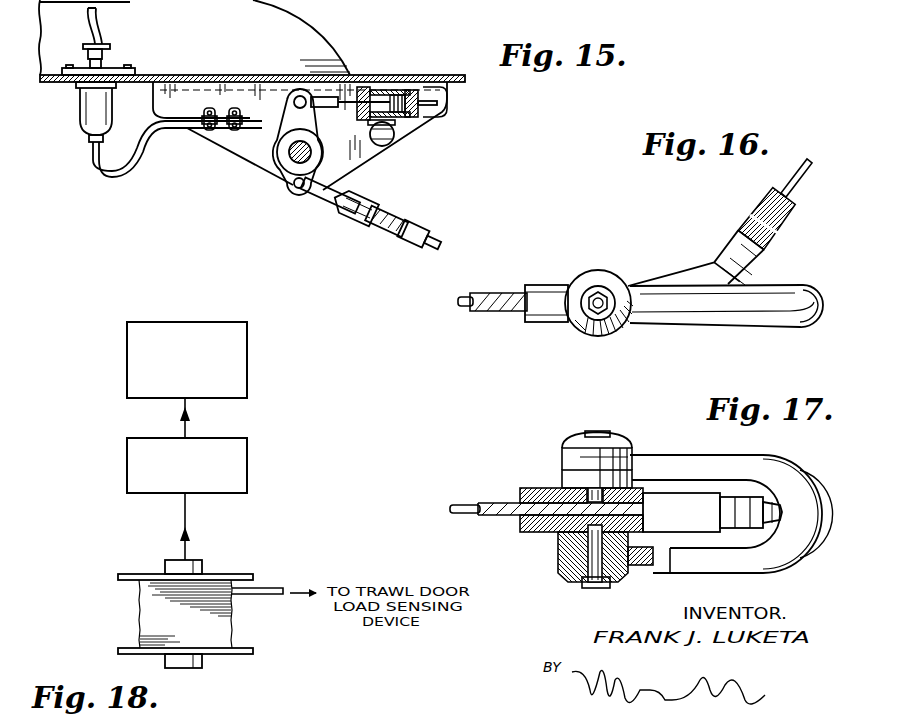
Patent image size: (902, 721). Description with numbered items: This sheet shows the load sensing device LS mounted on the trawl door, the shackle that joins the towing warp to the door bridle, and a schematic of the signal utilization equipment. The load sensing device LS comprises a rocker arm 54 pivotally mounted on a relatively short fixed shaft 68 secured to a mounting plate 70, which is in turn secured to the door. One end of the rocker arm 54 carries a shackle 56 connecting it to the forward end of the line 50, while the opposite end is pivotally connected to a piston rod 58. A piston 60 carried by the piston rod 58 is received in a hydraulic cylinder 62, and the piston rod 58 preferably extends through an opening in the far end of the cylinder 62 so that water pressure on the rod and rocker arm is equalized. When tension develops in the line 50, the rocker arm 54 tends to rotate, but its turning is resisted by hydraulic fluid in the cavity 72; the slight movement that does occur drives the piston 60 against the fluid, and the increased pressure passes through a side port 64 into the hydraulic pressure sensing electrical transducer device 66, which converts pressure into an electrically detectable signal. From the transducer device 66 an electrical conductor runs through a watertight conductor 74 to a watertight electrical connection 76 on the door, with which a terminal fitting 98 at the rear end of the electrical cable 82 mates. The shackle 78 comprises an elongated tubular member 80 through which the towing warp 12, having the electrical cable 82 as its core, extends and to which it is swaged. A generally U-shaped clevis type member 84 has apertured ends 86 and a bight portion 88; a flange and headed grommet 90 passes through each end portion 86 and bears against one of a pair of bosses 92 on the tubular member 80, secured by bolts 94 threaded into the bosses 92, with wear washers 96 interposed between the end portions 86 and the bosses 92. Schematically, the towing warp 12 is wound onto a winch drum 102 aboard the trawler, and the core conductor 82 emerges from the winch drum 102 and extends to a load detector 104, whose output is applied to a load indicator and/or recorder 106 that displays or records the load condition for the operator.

In FIG. 15, the load sensing device LS is at (350, 58).
In FIG. 15, the terminal fitting 98 is at (107, 62).
In FIG. 15, the watertight electrical connection 76 is at (90, 108).
In FIG. 15, the watertight conductor 74 is at (97, 165).
In FIG. 15, the mounting plate 70 is at (227, 143).
In FIG. 15, the fixed shaft 68 is at (290, 150).
In FIG. 15, the rocker arm 54 is at (283, 173).
In FIG. 15, the shackle 56 is at (317, 210).
In FIG. 15, the line 50 is at (424, 233).
In FIG. 15, the piston rod 58 is at (345, 100).
In FIG. 15, the cavity 72 is at (385, 95).
In FIG. 15, the hydraulic cylinder 62 is at (415, 88).
In FIG. 15, the piston 60 is at (420, 120).
In FIG. 15, the side port 64 is at (400, 125).
In FIG. 15, the hydraulic pressure sensing electrical transducer device 66 is at (381, 146).
In FIG. 16, the shackle 78 is at (621, 340).
In FIG. 17, the shackle 78 is at (672, 445).
In FIG. 16, the elongated tubular member 80 is at (547, 290).
In FIG. 17, the elongated tubular member 80 is at (683, 498).
In FIG. 16, the electrical cable 82 is at (470, 307).
In FIG. 17, the electrical cable 82 is at (453, 505).
In FIG. 18, the electrical cable 82 is at (188, 512).
In FIG. 16, the towing warp 12 is at (502, 297).
In FIG. 17, the towing warp 12 is at (488, 505).
In FIG. 18, the towing warp 12 is at (258, 596).
In FIG. 16, the U-shaped clevis type member 84 is at (710, 320).
In FIG. 17, the U-shaped clevis type member 84 is at (715, 567).
In FIG. 16, the bight portion 88 is at (790, 323).
In FIG. 17, the bight portion 88 is at (780, 553).
In FIG. 16, the flange and headed grommet 90 is at (582, 323).
In FIG. 17, the flange and headed grommet 90 is at (577, 435).
In FIG. 17, the bosses 92 is at (557, 487).
In FIG. 16, the bolts 94 is at (600, 297).
In FIG. 17, the bolts 94 is at (607, 433).
In FIG. 17, the wear washers 96 is at (570, 473).
In FIG. 17, the apertured ends 86 is at (570, 447).
In FIG. 18, the winch drum 102 is at (236, 655).
In FIG. 18, the load detector 104 is at (248, 468).
In FIG. 18, the load indicator and/or recorder 106 is at (248, 372).